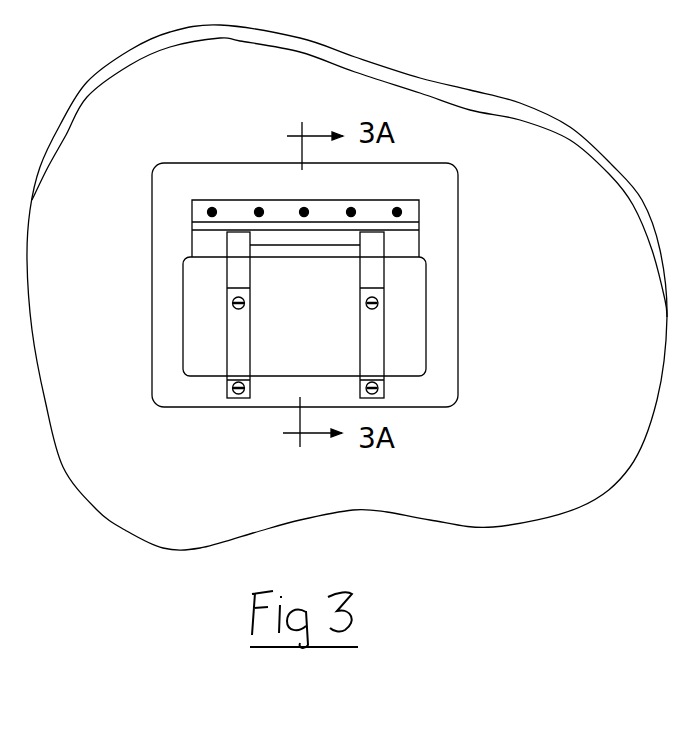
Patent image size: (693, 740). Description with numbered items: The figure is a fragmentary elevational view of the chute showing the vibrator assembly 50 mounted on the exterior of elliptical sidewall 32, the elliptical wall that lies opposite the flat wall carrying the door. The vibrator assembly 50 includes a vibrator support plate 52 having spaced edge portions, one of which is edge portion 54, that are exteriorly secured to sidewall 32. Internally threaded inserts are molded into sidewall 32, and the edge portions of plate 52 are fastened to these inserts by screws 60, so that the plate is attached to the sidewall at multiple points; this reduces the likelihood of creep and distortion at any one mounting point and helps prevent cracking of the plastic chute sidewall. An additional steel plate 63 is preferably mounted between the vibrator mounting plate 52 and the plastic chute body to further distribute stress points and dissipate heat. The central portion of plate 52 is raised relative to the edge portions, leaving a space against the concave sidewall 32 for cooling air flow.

The elliptical sidewall 32 is at (540, 160).
The vibrator assembly 50 is at (172, 393).
The vibrator support plate 52 is at (192, 237).
The edge portion 54 is at (413, 215).
The screws 60 is at (259, 210).
The steel plate 63 is at (162, 315).